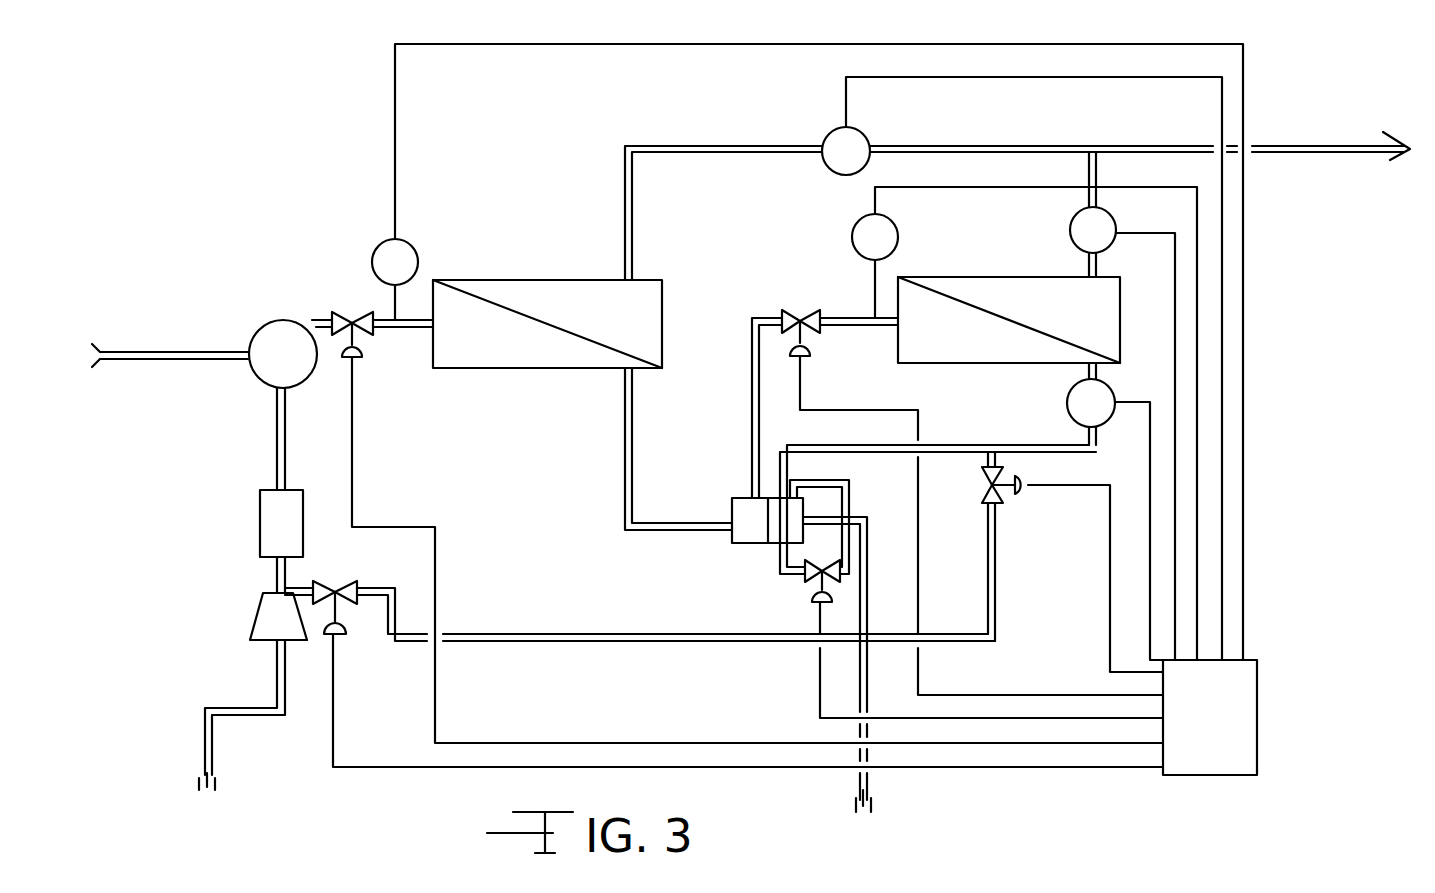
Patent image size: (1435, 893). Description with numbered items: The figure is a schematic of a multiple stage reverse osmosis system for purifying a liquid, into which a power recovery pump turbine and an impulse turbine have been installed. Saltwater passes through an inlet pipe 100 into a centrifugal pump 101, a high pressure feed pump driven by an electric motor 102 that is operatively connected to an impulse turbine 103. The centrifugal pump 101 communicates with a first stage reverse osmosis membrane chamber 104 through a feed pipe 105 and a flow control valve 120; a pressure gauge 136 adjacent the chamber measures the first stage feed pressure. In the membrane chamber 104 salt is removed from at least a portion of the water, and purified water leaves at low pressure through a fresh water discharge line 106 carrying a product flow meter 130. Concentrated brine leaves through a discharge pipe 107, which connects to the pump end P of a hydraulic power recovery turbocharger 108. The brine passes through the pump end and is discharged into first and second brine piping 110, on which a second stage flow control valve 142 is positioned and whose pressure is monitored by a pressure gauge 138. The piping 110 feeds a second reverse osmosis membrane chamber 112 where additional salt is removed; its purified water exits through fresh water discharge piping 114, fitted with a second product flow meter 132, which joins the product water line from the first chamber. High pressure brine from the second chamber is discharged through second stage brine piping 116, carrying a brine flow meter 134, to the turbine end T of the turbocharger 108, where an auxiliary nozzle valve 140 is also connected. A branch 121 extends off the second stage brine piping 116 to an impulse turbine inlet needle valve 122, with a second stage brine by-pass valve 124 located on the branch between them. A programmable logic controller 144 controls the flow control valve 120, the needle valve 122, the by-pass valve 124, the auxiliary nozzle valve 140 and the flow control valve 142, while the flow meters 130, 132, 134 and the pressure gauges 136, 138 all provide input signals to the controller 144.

The inlet pipe 100 is at (136, 352).
The centrifugal pump 101 is at (255, 335).
The electric motor 102 is at (260, 506).
The impulse turbine 103 is at (262, 612).
The first stage reverse osmosis membrane chamber 104 is at (537, 280).
The feed pipe 105 is at (318, 320).
The fresh water discharge line 106 is at (718, 100).
The discharge pipe 107 is at (625, 448).
The hydraulic power recovery pump turbine or turbocharger 108 is at (735, 498).
The first and second brine piping 110 is at (752, 426).
The second reverse osmosis membrane chamber 112 is at (1003, 277).
The fresh water discharge piping 114 is at (1098, 268).
The second stage brine piping 116 is at (1010, 408).
The flow control valve 120 is at (352, 312).
The branch 121 is at (545, 634).
The impulse turbine inlet needle valve 122 is at (333, 581).
The second stage brine by-pass valve 124 is at (1005, 500).
The product flow meter 130 is at (830, 135).
The second product flow meter 132 is at (1113, 226).
The brine flow meter 134 is at (1108, 423).
The pressure gauge 136 is at (378, 248).
The pressure gauge 138 is at (855, 222).
The hydraulic turbocharger auxiliary nozzle valve 140 is at (808, 570).
The second stage flow control valve 142 is at (800, 310).
The programmable logic controller 144 is at (1257, 712).